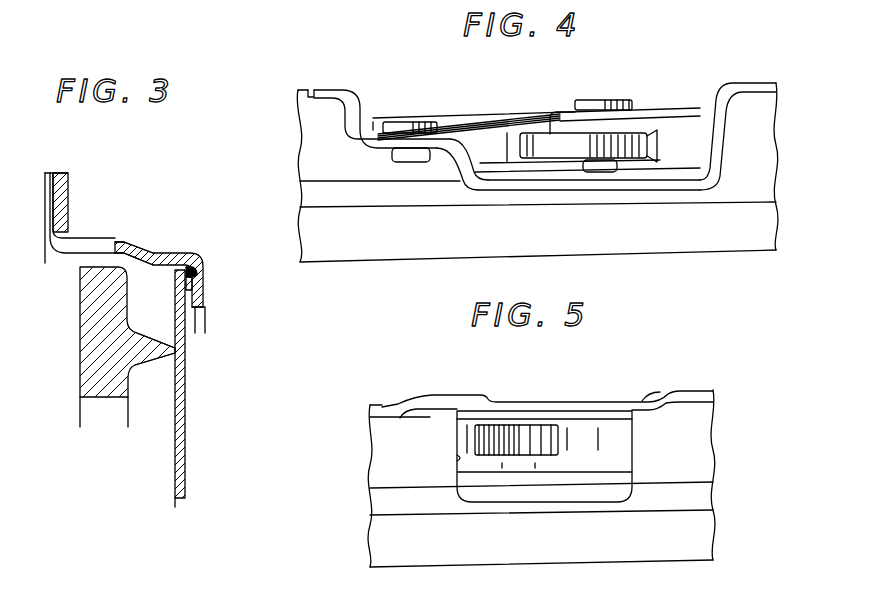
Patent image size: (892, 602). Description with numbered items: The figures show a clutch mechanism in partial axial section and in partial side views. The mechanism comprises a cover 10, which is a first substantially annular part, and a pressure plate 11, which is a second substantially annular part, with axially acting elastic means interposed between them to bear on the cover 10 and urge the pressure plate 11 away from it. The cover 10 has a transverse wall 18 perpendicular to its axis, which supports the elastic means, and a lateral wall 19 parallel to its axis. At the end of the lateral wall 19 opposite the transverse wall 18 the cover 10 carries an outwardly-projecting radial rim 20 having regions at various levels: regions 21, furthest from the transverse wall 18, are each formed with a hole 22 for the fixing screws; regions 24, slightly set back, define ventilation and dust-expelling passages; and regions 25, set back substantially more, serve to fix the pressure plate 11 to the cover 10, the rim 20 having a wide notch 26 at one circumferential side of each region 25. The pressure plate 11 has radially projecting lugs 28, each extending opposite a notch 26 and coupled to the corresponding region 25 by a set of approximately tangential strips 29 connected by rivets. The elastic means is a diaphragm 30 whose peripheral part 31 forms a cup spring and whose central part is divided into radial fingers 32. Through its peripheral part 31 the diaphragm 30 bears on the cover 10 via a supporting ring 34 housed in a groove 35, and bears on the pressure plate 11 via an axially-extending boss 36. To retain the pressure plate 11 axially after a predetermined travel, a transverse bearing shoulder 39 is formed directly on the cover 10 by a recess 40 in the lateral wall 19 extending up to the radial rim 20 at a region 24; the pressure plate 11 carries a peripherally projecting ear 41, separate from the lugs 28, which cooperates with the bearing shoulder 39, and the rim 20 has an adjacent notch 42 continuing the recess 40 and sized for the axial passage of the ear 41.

In FIG. 3, the cover 10 is at (191, 244).
In FIG. 4, the cover 10 is at (716, 265).
In FIG. 5, the cover 10 is at (713, 565).
In FIG. 3, the pressure plate 11 is at (76, 388).
In FIG. 4, the pressure plate 11 is at (680, 103).
In FIG. 5, the pressure plate 11 is at (545, 480).
In FIG. 3, the transverse wall 18 is at (207, 296).
In FIG. 4, the transverse wall 18 is at (349, 262).
In FIG. 5, the transverse wall 18 is at (666, 564).
In FIG. 3, the lateral wall 19 is at (157, 250).
In FIG. 4, the lateral wall 19 is at (305, 171).
In FIG. 5, the lateral wall 19 is at (380, 462).
In FIG. 3, the radial rim 20 is at (57, 170).
In FIG. 4, the radial rim 20 is at (553, 193).
In FIG. 5, the radial rim 20 is at (382, 402).
In FIG. 3, the regions 21 is at (45, 203).
In FIG. 4, the regions 21 is at (332, 90).
In FIG. 5, the regions 21 is at (420, 398).
In FIG. 4, the hole 22 is at (311, 88).
In FIG. 3, the regions 24 is at (67, 178).
In FIG. 5, the regions 24 is at (582, 408).
In FIG. 4, the regions 25 is at (371, 140).
In FIG. 4, the notch 26 is at (472, 193).
In FIG. 4, the radially projecting lugs 28 is at (537, 140).
In FIG. 4, the strips 29 is at (450, 120).
In FIG. 3, the diaphragm 30 is at (193, 405).
In FIG. 3, the peripheral part 31 is at (192, 328).
In FIG. 3, the radial fingers 32 is at (186, 489).
In FIG. 3, the supporting ring 34 is at (193, 282).
In FIG. 3, the groove 35 is at (195, 269).
In FIG. 3, the boss 36 is at (157, 358).
In FIG. 5, the bearing shoulder 39 is at (502, 418).
In FIG. 3, the recess 40 is at (117, 242).
In FIG. 5, the recess 40 is at (457, 461).
In FIG. 5, the ear 41 is at (507, 452).
In FIG. 3, the notch 42 is at (68, 232).